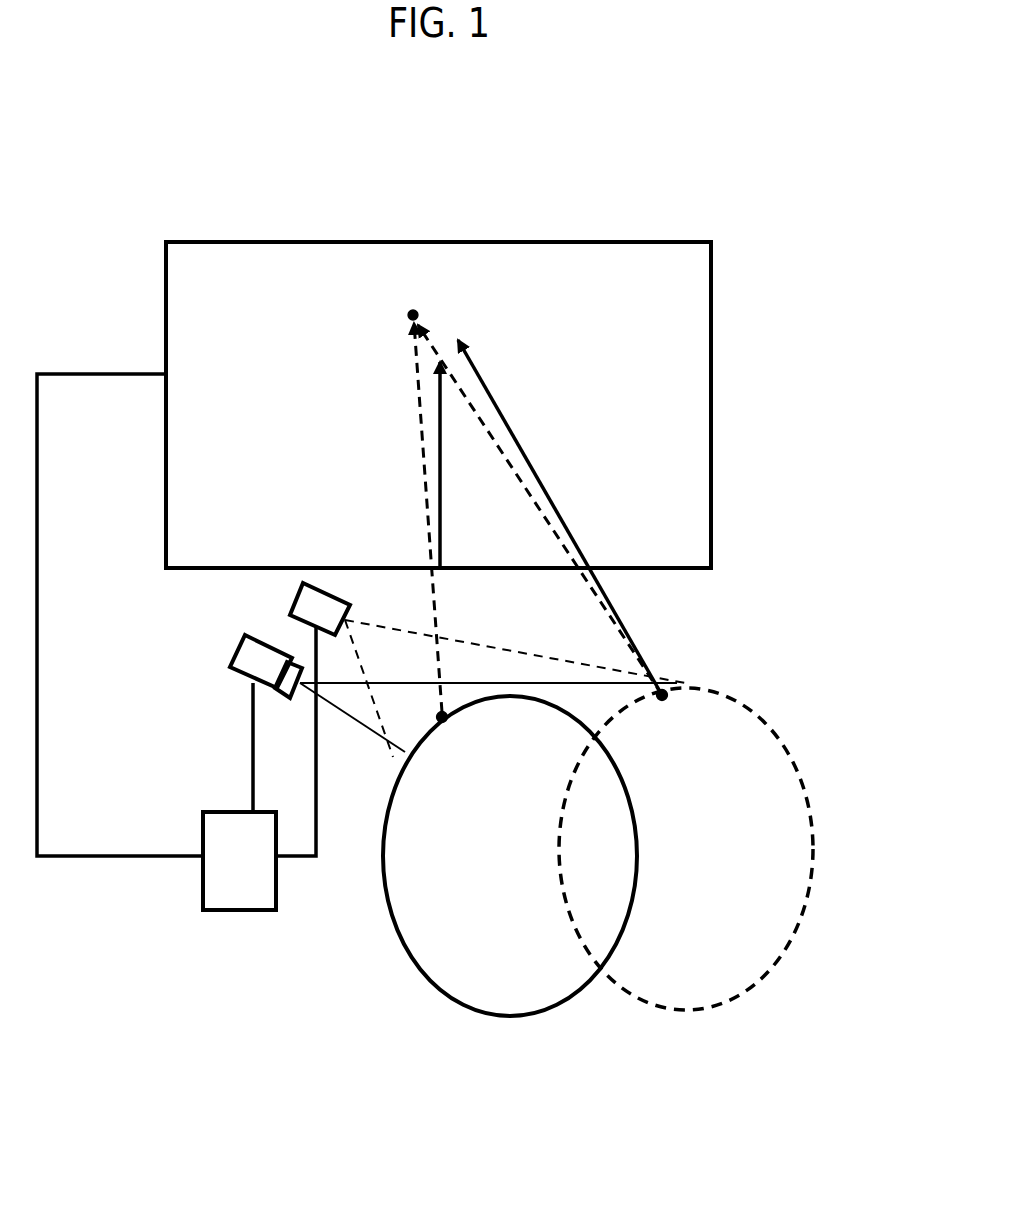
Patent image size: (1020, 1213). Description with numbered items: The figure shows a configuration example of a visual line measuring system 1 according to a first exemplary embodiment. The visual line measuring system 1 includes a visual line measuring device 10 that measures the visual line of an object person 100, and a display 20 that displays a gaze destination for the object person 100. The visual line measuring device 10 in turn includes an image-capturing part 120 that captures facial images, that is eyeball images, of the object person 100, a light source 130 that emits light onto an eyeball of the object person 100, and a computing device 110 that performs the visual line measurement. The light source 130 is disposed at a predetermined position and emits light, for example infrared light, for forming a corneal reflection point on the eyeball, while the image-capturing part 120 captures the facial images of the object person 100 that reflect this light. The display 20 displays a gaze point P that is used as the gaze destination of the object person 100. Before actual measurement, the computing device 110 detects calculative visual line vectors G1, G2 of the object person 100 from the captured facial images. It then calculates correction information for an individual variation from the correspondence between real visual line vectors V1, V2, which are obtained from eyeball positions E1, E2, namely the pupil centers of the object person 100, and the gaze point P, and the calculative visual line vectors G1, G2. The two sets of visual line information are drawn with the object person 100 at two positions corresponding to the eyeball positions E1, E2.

The visual line measuring system 1 is at (780, 310).
The visual line measuring device 10 is at (160, 592).
The display 20 is at (711, 476).
The object person 100 is at (396, 925).
The computing device 110 is at (216, 812).
The image-capturing part 120 is at (244, 646).
The light source 130 is at (300, 590).
The gaze point P is at (418, 312).
The eyeball position E1 is at (442, 734).
The eyeball position E2 is at (662, 714).
The real visual line vector V1 is at (420, 403).
The real visual line vector V2 is at (548, 508).
The calculative visual line vector G1 is at (440, 438).
The calculative visual line vector G2 is at (535, 470).